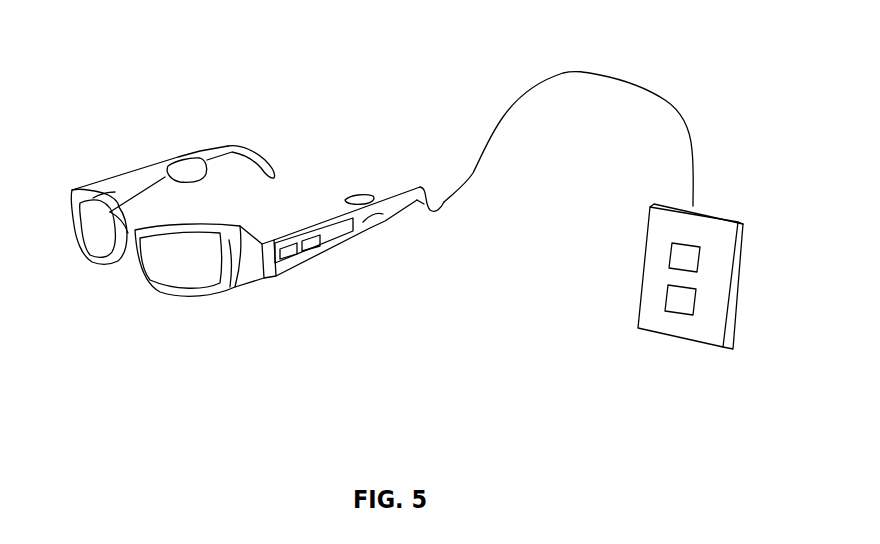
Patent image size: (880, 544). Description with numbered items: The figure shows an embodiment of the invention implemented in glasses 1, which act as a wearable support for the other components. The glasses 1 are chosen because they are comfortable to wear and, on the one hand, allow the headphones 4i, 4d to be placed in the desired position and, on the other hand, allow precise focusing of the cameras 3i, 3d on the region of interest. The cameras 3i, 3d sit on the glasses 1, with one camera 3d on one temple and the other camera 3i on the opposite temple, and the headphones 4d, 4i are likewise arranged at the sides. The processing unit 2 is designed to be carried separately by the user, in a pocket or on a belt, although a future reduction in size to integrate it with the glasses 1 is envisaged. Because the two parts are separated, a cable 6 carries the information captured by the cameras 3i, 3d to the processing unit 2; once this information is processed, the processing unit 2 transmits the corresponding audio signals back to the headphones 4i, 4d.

The glasses 1 is at (257, 241).
The processing unit 2 is at (660, 317).
The camera 3d is at (90, 172).
The camera 3i is at (267, 229).
The headphone 4d is at (200, 158).
The headphone 4i is at (359, 190).
The cable 6 is at (499, 160).